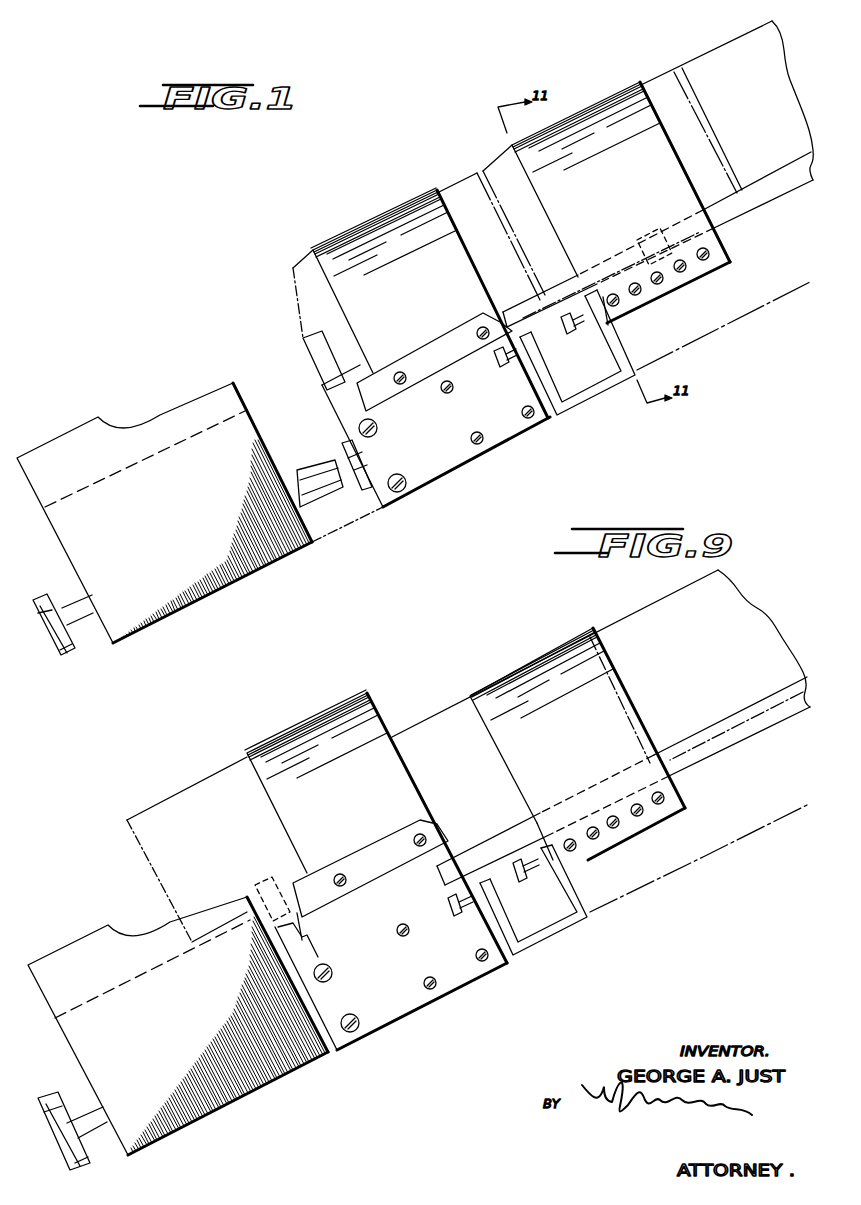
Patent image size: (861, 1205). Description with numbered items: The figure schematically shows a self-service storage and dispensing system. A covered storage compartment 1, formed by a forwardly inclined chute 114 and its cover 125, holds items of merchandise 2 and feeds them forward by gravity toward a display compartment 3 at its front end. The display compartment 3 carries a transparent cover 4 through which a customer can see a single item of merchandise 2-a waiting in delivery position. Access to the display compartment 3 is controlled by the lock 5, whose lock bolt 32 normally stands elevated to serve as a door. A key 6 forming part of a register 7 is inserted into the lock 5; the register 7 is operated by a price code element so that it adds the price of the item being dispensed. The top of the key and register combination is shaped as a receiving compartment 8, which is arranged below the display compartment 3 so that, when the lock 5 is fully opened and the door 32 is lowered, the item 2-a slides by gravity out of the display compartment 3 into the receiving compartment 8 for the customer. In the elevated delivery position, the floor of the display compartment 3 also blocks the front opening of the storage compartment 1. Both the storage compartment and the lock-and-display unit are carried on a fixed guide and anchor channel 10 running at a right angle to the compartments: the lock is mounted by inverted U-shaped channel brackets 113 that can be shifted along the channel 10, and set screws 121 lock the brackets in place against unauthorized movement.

In FIG. 1, the storage compartment 1 is at (580, 117).
In FIG. 9, the storage compartment 1 is at (370, 868).
In FIG. 1, the item of merchandise 2 is at (716, 72).
In FIG. 9, the item of merchandise 2 is at (448, 727).
In FIG. 1, the item of merchandise 2-a is at (462, 195).
In FIG. 9, the item of merchandise 2-a is at (200, 795).
In FIG. 1, the display compartment 3 is at (375, 220).
In FIG. 9, the display compartment 3 is at (343, 703).
In FIG. 1, the transparent cover 4 is at (336, 243).
In FIG. 9, the transparent cover 4 is at (281, 736).
In FIG. 1, the lock 5 is at (438, 477).
In FIG. 9, the lock 5 is at (424, 1000).
In FIG. 1, the key 6 is at (312, 465).
In FIG. 1, the register 7 is at (231, 577).
In FIG. 9, the register 7 is at (219, 1106).
In FIG. 1, the receiving compartment 8 is at (78, 436).
In FIG. 9, the receiving compartment 8 is at (75, 950).
In FIG. 1, the guide and anchor channel 10 is at (597, 390).
In FIG. 9, the guide and anchor channel 10 is at (588, 923).
In FIG. 1, the lock bolt 32 is at (312, 362).
In FIG. 1, the channel bracket 113 is at (540, 348).
In FIG. 9, the channel bracket 113 is at (505, 897).
In FIG. 1, the chute 114 is at (765, 196).
In FIG. 9, the chute 114 is at (713, 750).
In FIG. 9, the set screw 121 is at (526, 880).
In FIG. 1, the cover 125 is at (611, 100).
In FIG. 9, the cover 125 is at (523, 666).